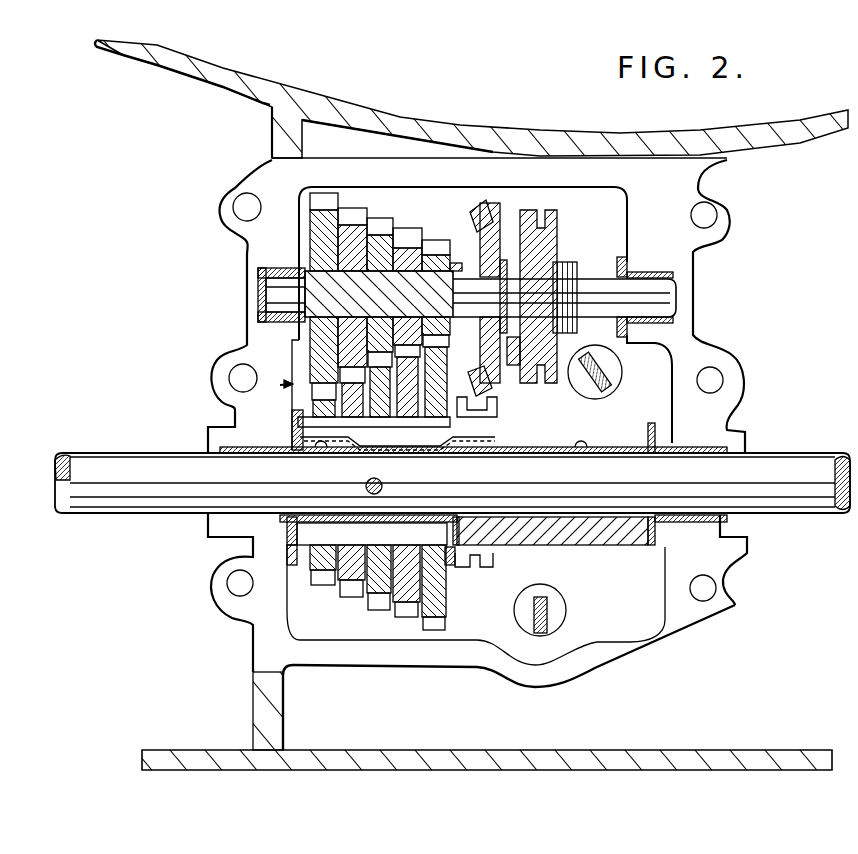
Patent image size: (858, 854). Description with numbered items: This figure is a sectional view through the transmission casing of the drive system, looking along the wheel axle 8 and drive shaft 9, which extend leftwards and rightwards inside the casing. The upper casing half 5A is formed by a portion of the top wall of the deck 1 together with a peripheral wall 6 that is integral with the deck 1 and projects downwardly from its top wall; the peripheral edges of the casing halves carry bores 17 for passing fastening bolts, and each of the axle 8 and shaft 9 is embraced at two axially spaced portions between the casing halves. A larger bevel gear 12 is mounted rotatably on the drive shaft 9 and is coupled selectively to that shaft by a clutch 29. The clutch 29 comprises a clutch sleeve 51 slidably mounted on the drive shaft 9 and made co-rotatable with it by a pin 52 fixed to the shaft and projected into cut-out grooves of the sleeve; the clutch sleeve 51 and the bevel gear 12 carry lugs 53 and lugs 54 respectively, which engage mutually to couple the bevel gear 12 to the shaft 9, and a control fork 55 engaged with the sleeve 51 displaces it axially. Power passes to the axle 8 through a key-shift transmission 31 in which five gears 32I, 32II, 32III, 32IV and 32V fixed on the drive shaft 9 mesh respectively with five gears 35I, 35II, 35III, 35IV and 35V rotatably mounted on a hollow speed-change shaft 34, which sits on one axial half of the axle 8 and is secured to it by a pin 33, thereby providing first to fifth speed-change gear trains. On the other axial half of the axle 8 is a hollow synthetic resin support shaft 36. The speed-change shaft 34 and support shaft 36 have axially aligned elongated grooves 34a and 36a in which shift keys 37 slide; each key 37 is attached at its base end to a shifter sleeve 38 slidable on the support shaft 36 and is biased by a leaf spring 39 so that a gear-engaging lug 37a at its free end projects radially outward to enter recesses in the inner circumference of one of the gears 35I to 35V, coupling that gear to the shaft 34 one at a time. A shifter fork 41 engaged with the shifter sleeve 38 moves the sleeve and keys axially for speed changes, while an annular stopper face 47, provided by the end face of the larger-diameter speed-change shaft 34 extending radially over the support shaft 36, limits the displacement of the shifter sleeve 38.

The deck 1 is at (785, 140).
The upper casing half 5A is at (657, 650).
The peripheral wall 6 is at (255, 332).
The wheel axle 8 is at (783, 470).
The drive shaft 9 is at (635, 296).
The larger bevel gear 12 is at (470, 205).
The bores 17 is at (247, 207).
The clutch 29 is at (515, 197).
The key-shift transmission 31 is at (282, 385).
The first gear 32I is at (438, 245).
The second gear 32II is at (400, 230).
The third gear 32III is at (380, 222).
The fourth gear 32IV is at (318, 198).
The fifth gear 32V is at (313, 200).
The pin 33 is at (382, 486).
The speed-change shaft 34 is at (475, 530).
The elongated groove 34a is at (320, 448).
The first gear 35I is at (440, 628).
The second gear 35II is at (397, 617).
The third gear 35III is at (372, 603).
The fourth gear 35IV is at (333, 597).
The fifth gear 35V is at (303, 580).
The support shaft 36 is at (595, 527).
The elongated groove 36a is at (583, 449).
The shift keys 37 is at (435, 448).
The gear-engaging lug 37a is at (292, 414).
The shifter sleeve 38 is at (462, 557).
The leaf spring 39 is at (372, 447).
The shifter fork 41 is at (547, 632).
The annular stopper face 47 is at (452, 567).
The clutch sleeve 51 is at (552, 215).
The pin 52 is at (565, 267).
The lugs 53 is at (507, 357).
The lugs 54 is at (508, 230).
The control fork 55 is at (603, 376).